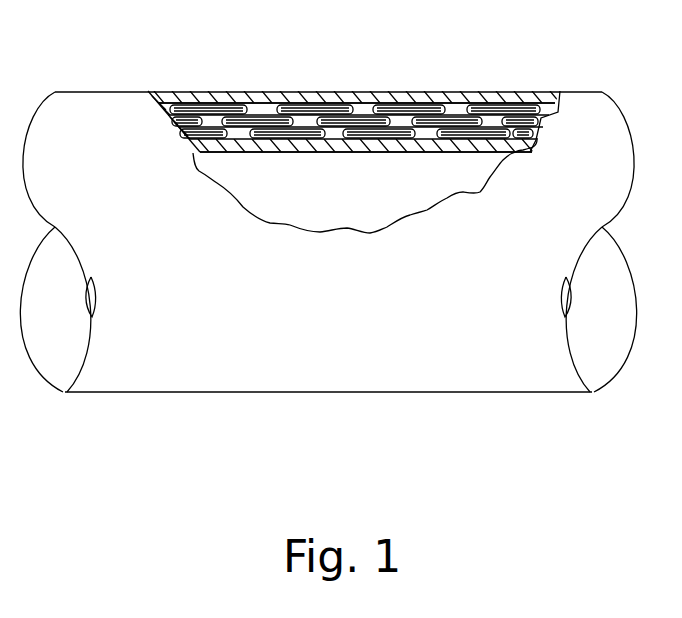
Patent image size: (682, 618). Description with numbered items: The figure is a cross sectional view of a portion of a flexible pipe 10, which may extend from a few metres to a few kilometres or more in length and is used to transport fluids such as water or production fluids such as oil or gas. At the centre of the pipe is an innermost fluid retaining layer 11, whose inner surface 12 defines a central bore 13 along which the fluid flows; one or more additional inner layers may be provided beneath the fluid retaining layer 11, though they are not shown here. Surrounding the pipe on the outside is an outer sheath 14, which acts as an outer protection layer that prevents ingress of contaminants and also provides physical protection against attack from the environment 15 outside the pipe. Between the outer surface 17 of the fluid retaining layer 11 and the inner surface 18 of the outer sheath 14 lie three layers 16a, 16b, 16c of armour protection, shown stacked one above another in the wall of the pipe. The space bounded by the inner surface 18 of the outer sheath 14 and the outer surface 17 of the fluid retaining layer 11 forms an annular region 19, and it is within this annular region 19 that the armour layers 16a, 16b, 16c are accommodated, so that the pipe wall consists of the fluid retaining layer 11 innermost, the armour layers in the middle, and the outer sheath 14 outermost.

The flexible pipe 10 is at (427, 378).
The innermost fluid retaining layer 11 is at (280, 148).
The inner surface 12 is at (381, 162).
The central bore 13 is at (310, 180).
The outer sheath 14 is at (460, 101).
The environment 15 is at (343, 50).
The armour protection layer 16a is at (538, 150).
The armour protection layer 16b is at (540, 122).
The armour protection layer 16c is at (550, 106).
The outer surface 17 is at (170, 125).
The inner surface 18 is at (162, 104).
The annular region 19 is at (497, 103).